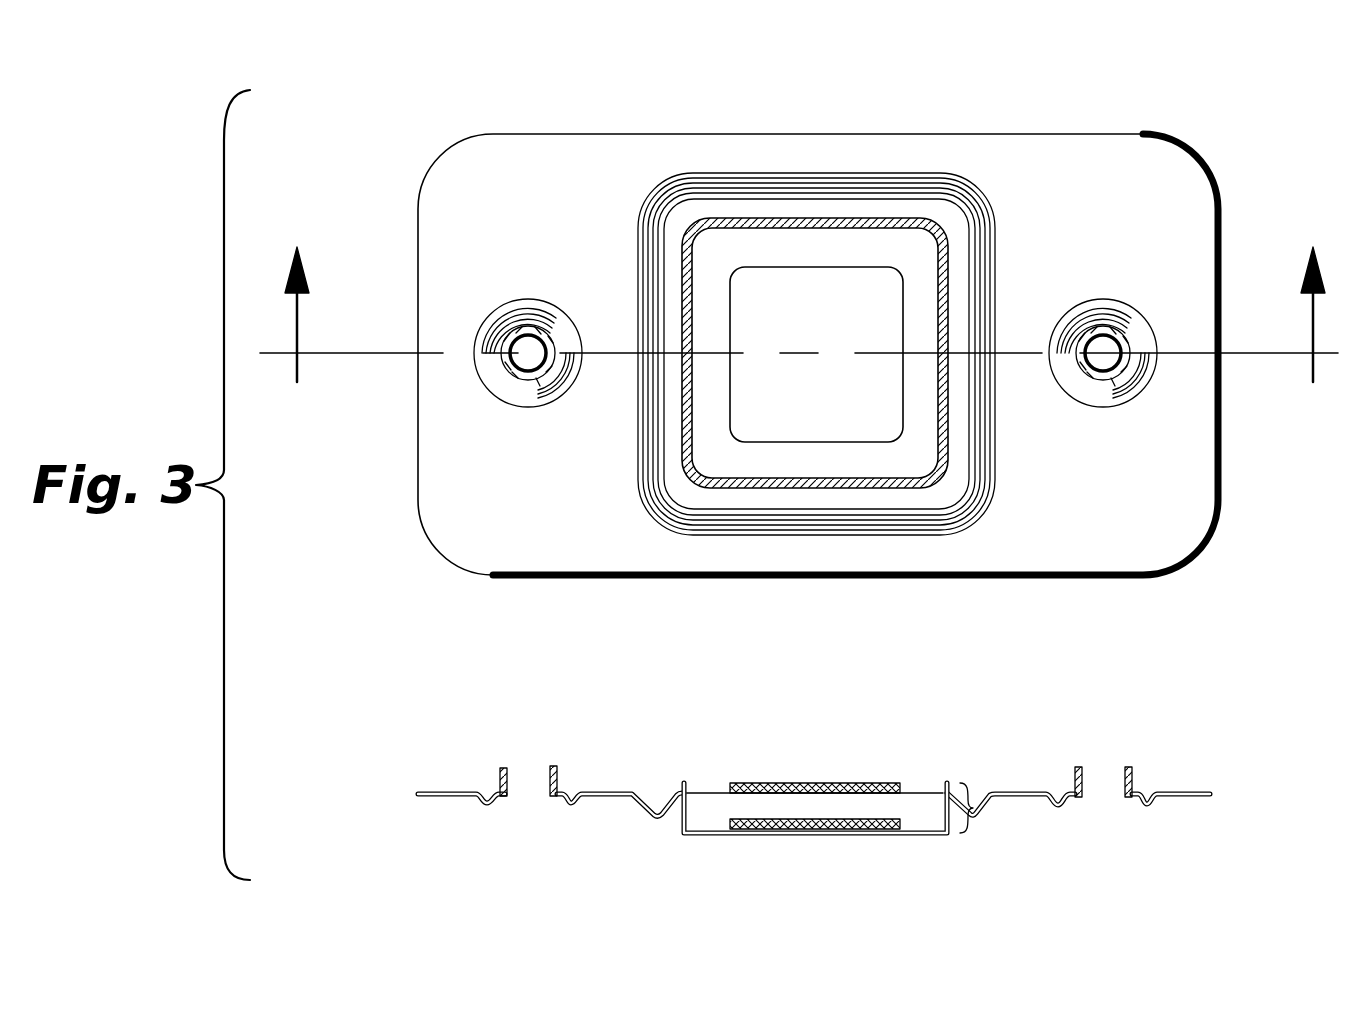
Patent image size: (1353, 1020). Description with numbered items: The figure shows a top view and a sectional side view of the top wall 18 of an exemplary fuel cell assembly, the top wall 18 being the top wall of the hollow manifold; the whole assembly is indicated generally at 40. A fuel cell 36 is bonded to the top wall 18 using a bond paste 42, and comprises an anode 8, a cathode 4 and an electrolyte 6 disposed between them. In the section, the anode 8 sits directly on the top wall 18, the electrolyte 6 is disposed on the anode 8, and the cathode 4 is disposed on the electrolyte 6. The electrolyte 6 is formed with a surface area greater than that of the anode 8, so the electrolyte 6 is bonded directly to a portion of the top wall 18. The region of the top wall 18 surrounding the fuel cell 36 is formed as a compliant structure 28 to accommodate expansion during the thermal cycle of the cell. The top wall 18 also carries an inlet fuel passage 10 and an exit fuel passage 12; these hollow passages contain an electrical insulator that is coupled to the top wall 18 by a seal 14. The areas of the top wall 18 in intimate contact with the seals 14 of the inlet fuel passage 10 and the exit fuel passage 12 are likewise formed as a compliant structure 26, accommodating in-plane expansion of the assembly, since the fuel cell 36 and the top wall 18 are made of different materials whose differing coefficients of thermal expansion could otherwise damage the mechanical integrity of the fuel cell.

The window assembly 40 is at (358, 136).
The top wall 18 is at (1180, 237).
The compliant structure 28 is at (655, 212).
The bond paste 42 is at (940, 225).
The cathode 4 is at (777, 285).
The electrolyte 6 is at (848, 235).
The anode 8 is at (917, 793).
The fuel cell 36 is at (975, 815).
The compliant structure 26 is at (515, 310).
The exit fuel passage 12 is at (1107, 343).
The seal 14 is at (1132, 338).
The inlet fuel passage 10 is at (510, 365).